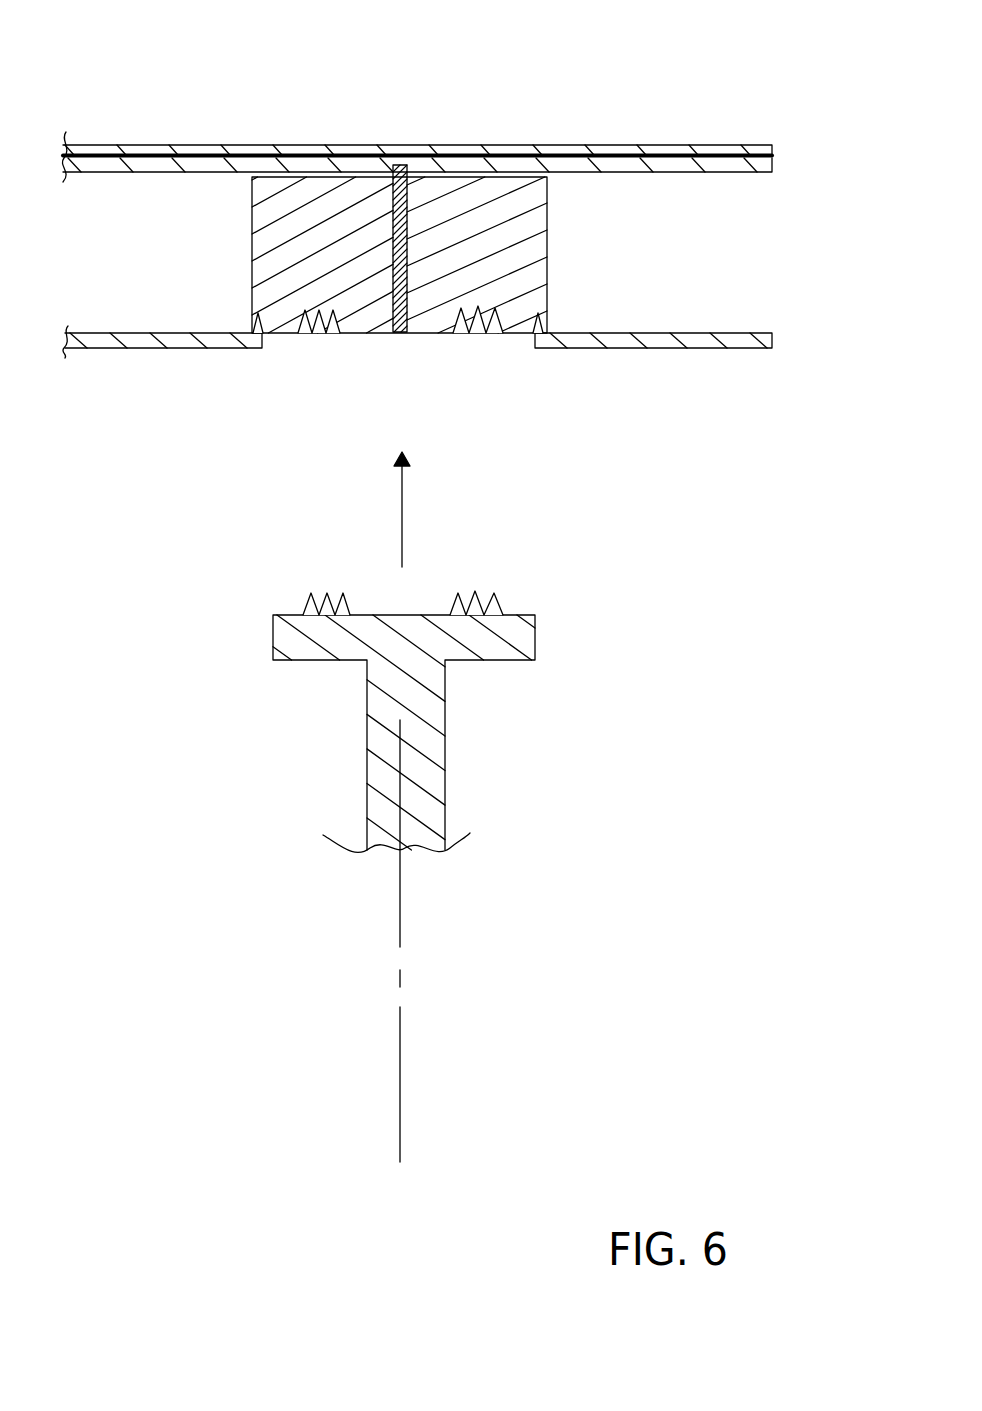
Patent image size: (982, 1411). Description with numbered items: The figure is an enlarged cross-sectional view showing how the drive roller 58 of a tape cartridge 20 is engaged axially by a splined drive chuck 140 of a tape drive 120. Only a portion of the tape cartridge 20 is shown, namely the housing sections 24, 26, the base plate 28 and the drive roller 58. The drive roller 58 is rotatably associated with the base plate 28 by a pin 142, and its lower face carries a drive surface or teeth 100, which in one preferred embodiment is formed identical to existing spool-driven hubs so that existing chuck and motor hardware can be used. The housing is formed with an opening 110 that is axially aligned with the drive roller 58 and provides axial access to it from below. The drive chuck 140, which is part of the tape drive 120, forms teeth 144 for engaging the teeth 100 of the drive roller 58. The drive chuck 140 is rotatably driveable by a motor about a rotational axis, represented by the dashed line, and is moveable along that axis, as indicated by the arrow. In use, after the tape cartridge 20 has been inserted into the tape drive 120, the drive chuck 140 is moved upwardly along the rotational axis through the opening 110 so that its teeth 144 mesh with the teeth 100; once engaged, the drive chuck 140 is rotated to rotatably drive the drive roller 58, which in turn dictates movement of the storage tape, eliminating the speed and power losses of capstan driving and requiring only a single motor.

The tape cartridge 20 is at (777, 100).
The housing section 24 is at (770, 142).
The base plate 28 is at (762, 173).
The housing section 26 is at (767, 333).
The drive roller 58 is at (548, 240).
The pin 142 is at (407, 170).
The opening 110 is at (262, 333).
The teeth 100 is at (473, 333).
The tape drive 120 is at (618, 920).
The drive chuck 140 is at (445, 735).
The teeth 144 is at (497, 597).